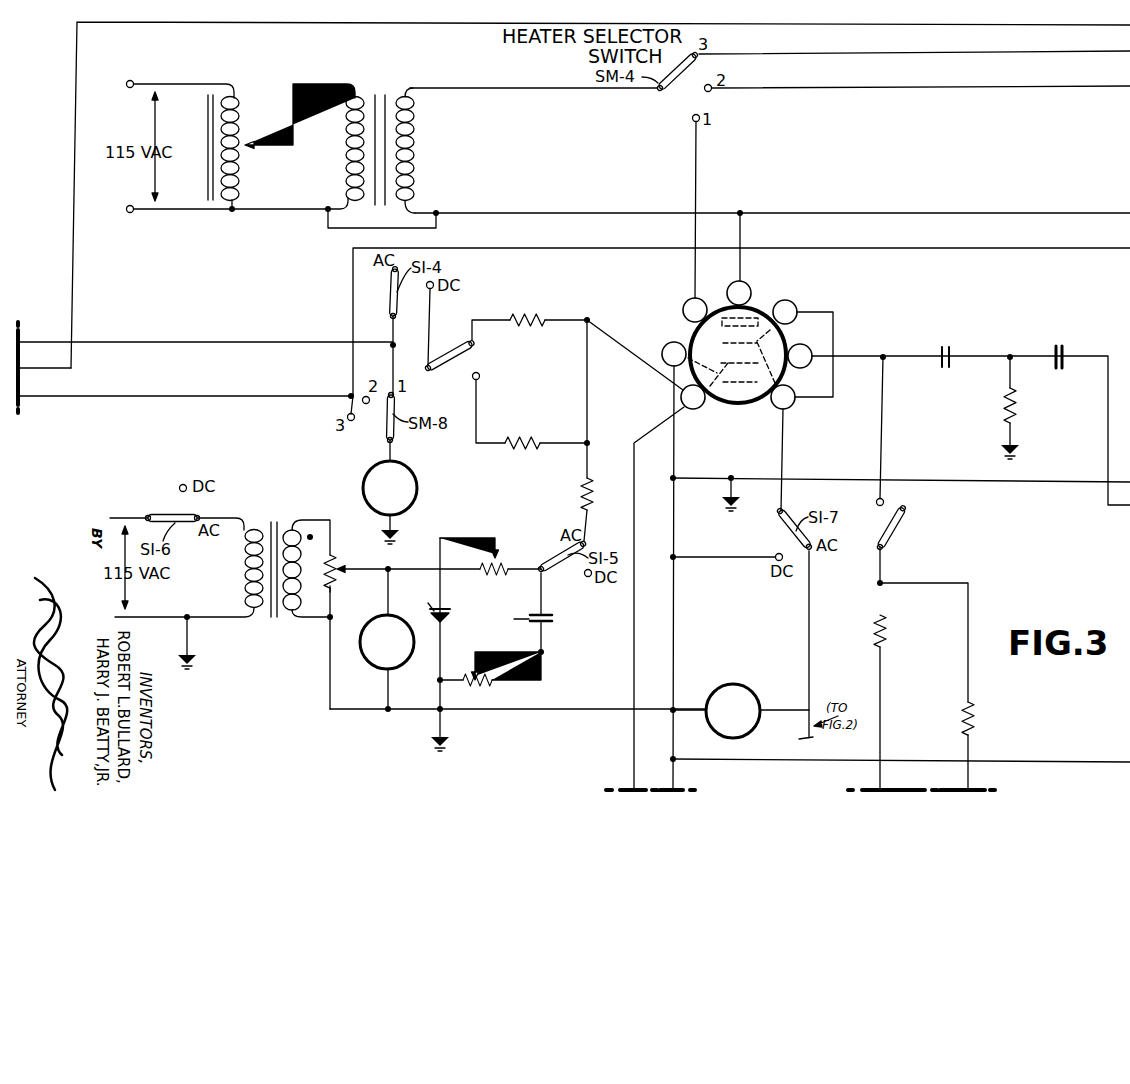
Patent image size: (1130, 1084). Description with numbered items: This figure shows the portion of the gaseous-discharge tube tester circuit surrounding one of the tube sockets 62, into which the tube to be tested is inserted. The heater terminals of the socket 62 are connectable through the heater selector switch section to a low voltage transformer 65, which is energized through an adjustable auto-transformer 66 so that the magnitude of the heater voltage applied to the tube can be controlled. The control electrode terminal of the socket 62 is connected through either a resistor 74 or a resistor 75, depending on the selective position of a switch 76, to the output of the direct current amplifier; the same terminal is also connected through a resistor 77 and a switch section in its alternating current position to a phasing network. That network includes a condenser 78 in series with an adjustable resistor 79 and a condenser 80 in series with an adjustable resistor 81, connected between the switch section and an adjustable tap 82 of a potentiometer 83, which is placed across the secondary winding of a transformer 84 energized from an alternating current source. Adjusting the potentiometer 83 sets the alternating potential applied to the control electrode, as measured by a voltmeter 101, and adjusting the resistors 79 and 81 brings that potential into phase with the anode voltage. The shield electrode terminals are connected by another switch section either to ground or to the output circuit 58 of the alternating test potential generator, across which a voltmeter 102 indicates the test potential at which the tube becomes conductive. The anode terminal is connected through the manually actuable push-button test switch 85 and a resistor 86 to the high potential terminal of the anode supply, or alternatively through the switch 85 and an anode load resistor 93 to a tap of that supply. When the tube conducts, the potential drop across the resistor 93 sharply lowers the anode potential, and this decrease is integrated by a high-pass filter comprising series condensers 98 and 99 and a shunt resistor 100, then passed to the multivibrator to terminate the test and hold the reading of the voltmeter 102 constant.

The output circuit 58 is at (807, 627).
The tube socket 62 is at (757, 308).
The low voltage transformer 65 is at (387, 88).
The adjustable auto-transformer 66 is at (236, 195).
The resistor 74 is at (540, 327).
The resistor 75 is at (535, 450).
The switch 76 is at (448, 360).
The resistor 77 is at (592, 498).
The condenser 78 is at (553, 619).
The adjustable resistor 79 is at (473, 674).
The condenser 80 is at (446, 610).
The adjustable resistor 81 is at (482, 567).
The adjustable tap 82 is at (339, 565).
The potentiometer 83 is at (337, 586).
The transformer 84 is at (278, 518).
The push-button test switch 85 is at (903, 505).
The resistor 86 is at (965, 718).
The resistor 93 is at (875, 638).
The condenser 98 is at (948, 352).
The condenser 99 is at (1063, 352).
The shunt resistor 100 is at (418, 492).
The voltmeter 101 is at (376, 618).
The voltmeter 102 is at (735, 688).